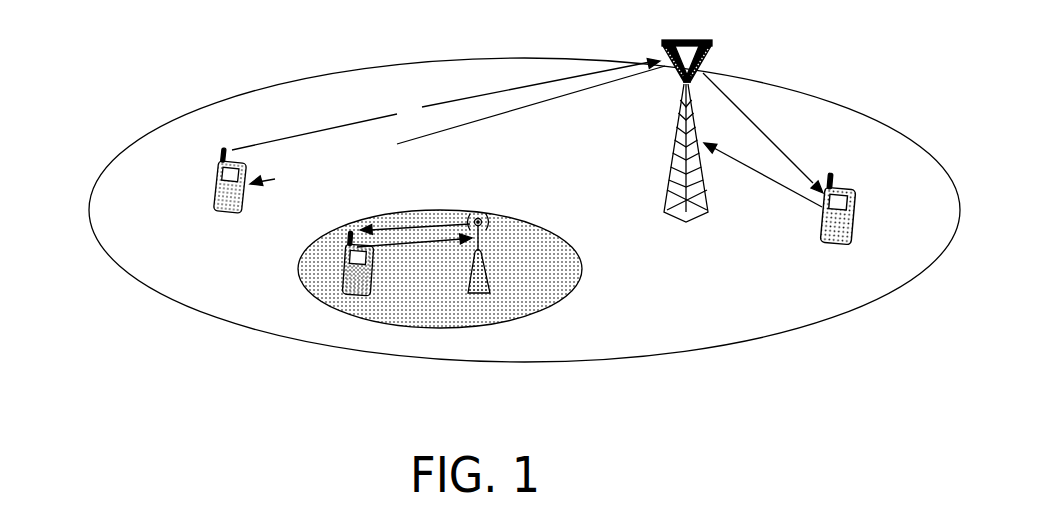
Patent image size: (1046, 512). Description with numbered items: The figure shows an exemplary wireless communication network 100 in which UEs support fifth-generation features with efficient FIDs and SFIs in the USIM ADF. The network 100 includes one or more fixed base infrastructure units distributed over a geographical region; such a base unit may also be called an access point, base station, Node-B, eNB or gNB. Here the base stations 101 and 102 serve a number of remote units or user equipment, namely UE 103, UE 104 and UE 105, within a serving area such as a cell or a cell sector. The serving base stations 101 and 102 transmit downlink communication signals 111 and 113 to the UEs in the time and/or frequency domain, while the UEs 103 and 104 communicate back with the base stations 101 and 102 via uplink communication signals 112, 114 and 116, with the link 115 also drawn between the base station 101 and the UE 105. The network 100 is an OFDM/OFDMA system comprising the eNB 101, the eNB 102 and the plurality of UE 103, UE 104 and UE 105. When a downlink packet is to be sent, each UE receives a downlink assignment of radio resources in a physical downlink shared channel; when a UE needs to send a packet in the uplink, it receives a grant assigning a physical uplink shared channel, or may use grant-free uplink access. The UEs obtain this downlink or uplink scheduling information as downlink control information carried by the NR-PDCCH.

The wireless communication network 100 is at (88, 208).
The base station 101 is at (712, 58).
The base station 102 is at (481, 216).
The user equipment 103 is at (216, 209).
The user equipment 104 is at (351, 243).
The user equipment 105 is at (842, 190).
The downlink communication signal 111 is at (357, 179).
The uplink communication signal 112 is at (459, 92).
The downlink communication signal 113 is at (425, 224).
The uplink communication signal 114 is at (425, 245).
The downlink communication to UE 105 115 is at (783, 150).
The uplink communication signal 116 is at (772, 183).